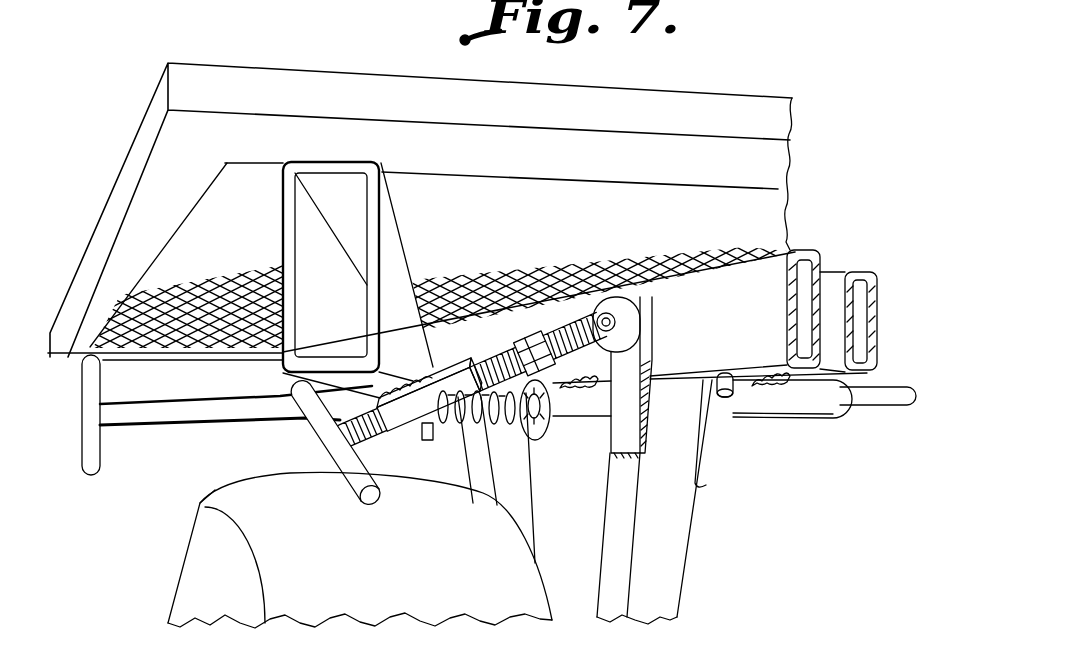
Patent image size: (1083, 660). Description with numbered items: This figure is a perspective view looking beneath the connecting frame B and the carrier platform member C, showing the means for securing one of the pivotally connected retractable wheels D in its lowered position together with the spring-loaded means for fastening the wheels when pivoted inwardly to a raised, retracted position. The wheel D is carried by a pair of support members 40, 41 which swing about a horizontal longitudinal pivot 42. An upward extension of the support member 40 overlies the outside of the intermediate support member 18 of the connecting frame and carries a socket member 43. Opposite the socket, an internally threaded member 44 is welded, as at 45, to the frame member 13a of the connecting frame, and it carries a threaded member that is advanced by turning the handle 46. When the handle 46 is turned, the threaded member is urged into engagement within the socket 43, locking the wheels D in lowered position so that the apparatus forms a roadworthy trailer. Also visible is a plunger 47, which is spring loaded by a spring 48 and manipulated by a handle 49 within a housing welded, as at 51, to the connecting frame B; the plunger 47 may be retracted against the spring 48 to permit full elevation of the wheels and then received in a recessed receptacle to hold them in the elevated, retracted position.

The carrier platform member C is at (633, 107).
The frame member 13a is at (233, 183).
The connecting frame B is at (528, 318).
The weld 45 is at (358, 366).
The internally threaded member 44 is at (452, 382).
The socket member 43 is at (603, 312).
The spring 48 is at (503, 433).
The weld 51 is at (574, 388).
The support member 41 is at (523, 513).
The support member 18 is at (775, 272).
The support member 40 is at (668, 585).
The pivot 42 is at (730, 390).
The plunger 47 is at (883, 405).
The handle 46 is at (320, 450).
The handle 49 is at (82, 477).
The retractable wheels D is at (197, 560).